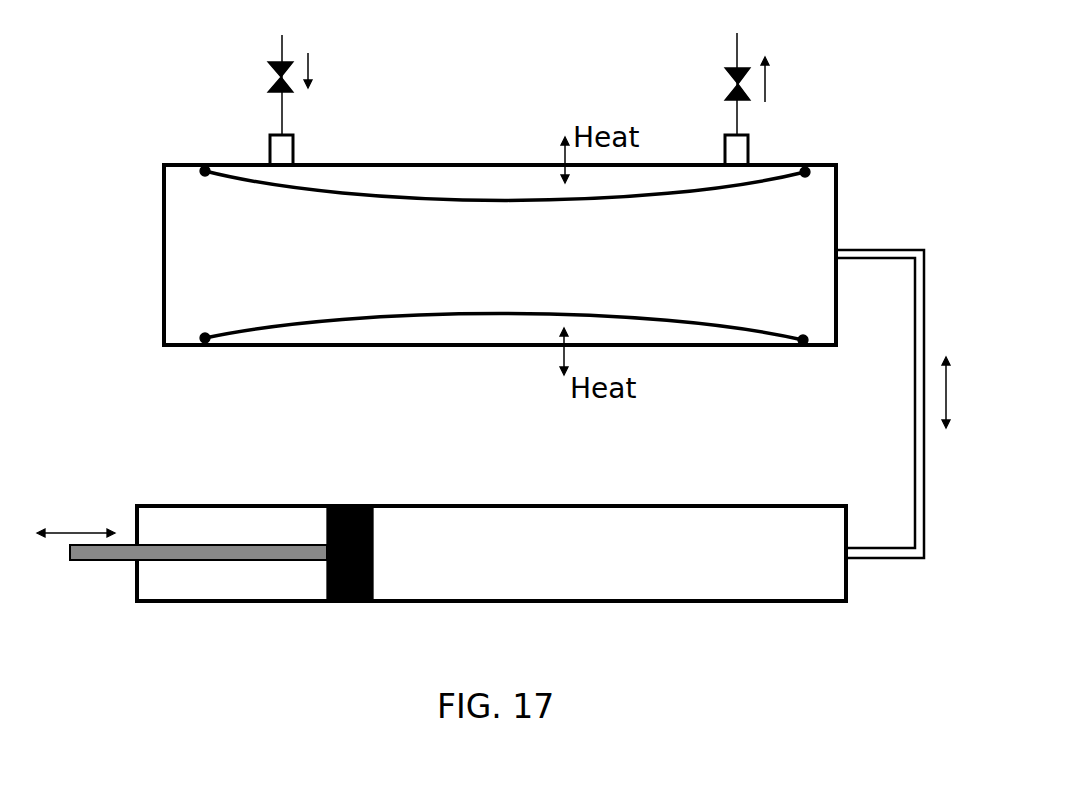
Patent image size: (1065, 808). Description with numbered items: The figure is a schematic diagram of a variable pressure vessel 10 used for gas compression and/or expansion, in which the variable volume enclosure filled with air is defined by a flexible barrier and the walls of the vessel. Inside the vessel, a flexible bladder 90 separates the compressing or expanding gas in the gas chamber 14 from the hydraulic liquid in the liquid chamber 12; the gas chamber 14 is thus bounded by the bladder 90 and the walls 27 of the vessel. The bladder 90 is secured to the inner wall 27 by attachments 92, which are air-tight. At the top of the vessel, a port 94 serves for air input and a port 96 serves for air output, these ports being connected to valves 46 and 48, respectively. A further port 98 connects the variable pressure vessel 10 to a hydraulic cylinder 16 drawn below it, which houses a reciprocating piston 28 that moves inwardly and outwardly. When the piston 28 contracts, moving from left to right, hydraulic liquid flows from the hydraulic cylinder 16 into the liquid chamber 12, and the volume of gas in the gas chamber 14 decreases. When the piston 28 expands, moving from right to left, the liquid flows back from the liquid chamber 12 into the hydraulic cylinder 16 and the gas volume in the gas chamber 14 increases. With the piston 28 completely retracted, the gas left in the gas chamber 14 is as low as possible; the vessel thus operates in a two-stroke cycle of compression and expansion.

The variable pressure vessel 10 is at (507, 163).
The liquid chamber 12 is at (687, 285).
The gas chamber 14 is at (533, 187).
The hydraulic cylinder 16 is at (617, 505).
The wall 27 is at (413, 347).
The piston 28 is at (362, 505).
The valve 46 is at (273, 80).
The valve 48 is at (732, 80).
The flexible bladder 90 is at (393, 317).
The attachments 92 is at (205, 338).
The port 94 is at (288, 148).
The port 96 is at (748, 150).
The port 98 is at (840, 250).